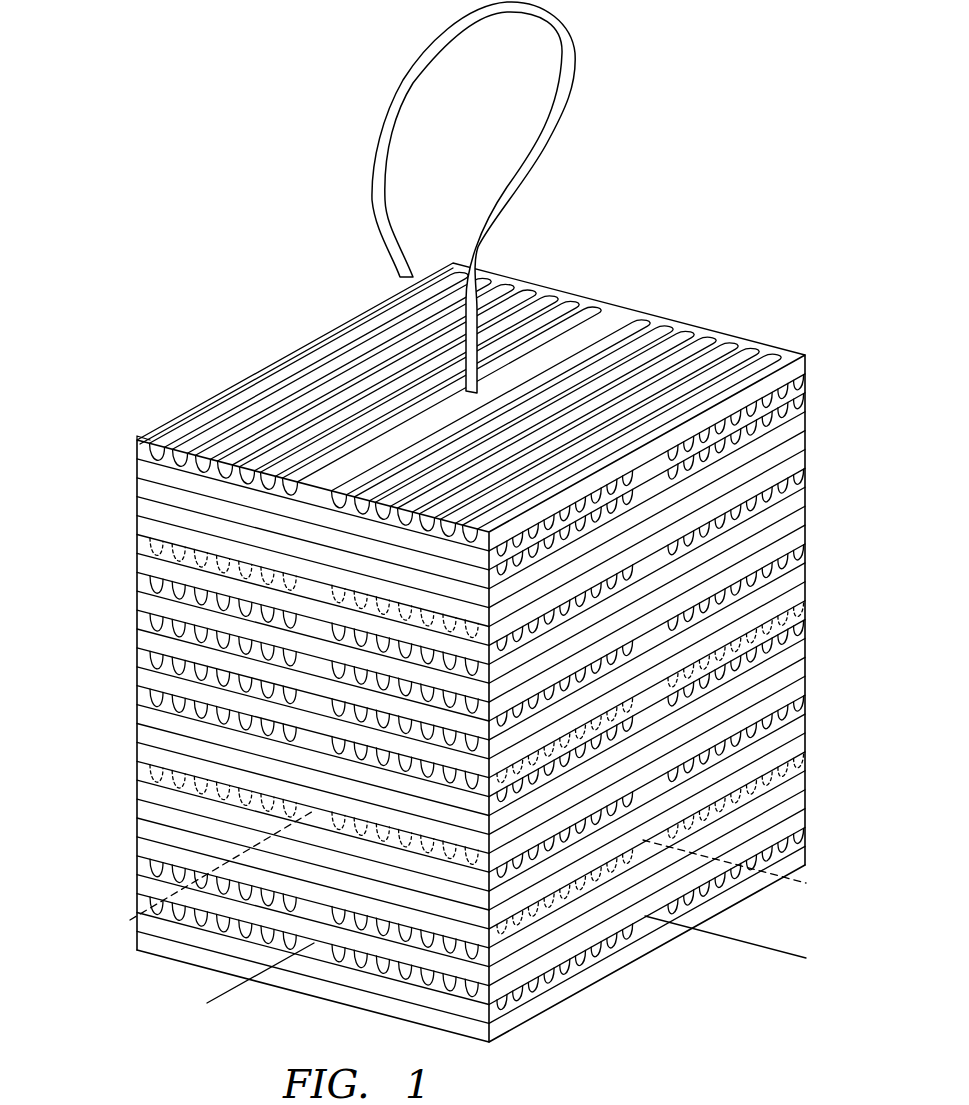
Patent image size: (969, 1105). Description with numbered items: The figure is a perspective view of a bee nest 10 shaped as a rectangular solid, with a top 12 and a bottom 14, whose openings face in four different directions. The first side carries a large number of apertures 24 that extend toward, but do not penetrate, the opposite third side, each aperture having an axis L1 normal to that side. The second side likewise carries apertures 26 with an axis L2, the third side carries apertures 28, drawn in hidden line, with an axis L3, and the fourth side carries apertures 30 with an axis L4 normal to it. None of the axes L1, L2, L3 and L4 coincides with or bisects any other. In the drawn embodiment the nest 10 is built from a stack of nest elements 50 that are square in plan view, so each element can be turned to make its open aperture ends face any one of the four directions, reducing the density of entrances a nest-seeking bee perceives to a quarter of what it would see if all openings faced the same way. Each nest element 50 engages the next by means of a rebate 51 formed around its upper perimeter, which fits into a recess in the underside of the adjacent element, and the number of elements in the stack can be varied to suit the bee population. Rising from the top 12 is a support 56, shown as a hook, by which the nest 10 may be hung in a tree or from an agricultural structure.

The nest 10 is at (469, 533).
The top 12 is at (469, 621).
The bottom 14 is at (644, 962).
The apertures 24 is at (155, 694).
The apertures 26 is at (786, 553).
The apertures 28 is at (184, 774).
The apertures 30 is at (549, 901).
The nest element 50 is at (807, 437).
The rebate 51 is at (805, 353).
The support 56 is at (568, 98).
The axis L1 is at (250, 987).
The axis L2 is at (739, 947).
The axis L3 is at (202, 883).
The axis L4 is at (737, 872).